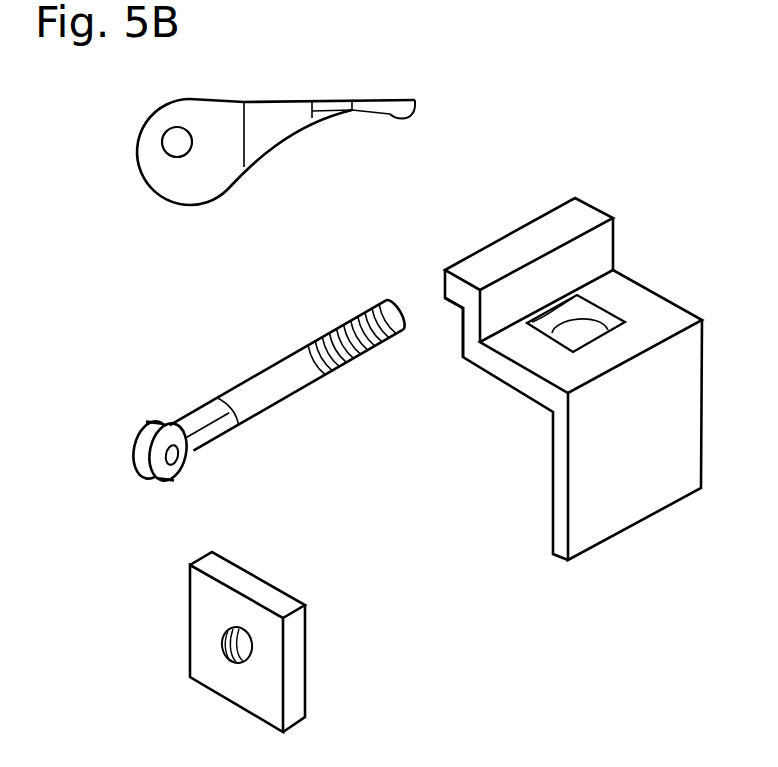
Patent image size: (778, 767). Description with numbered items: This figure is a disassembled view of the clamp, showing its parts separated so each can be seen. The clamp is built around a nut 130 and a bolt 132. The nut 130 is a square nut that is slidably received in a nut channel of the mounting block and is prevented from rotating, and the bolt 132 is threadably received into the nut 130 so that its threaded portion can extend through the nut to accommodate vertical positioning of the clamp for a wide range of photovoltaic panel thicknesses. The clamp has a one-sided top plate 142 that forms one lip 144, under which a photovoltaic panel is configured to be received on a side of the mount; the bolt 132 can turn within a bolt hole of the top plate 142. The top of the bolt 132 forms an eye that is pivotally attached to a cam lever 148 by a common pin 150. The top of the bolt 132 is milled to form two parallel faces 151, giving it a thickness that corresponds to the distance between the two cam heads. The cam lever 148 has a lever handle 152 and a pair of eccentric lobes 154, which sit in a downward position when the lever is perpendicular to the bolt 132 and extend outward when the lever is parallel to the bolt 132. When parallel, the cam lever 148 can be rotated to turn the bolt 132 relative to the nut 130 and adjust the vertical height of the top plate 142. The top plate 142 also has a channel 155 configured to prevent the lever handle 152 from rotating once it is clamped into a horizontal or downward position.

The nut 130 is at (188, 647).
The bolt 132 is at (266, 388).
The top plate 142 is at (552, 351).
The lip 144 is at (450, 304).
The cam lever 148 is at (261, 141).
The pin 150 is at (163, 147).
The parallel faces 151 is at (193, 420).
The lever handle 152 is at (393, 98).
The eccentric lobes 154 is at (172, 198).
The channel 155 is at (600, 305).